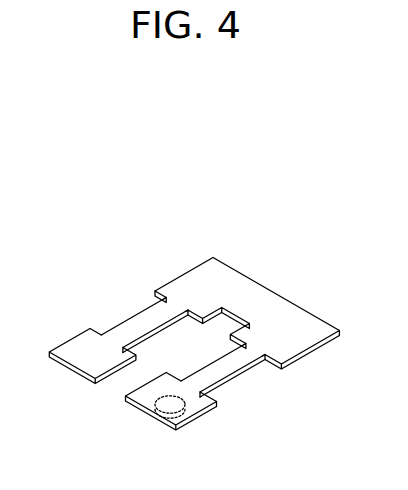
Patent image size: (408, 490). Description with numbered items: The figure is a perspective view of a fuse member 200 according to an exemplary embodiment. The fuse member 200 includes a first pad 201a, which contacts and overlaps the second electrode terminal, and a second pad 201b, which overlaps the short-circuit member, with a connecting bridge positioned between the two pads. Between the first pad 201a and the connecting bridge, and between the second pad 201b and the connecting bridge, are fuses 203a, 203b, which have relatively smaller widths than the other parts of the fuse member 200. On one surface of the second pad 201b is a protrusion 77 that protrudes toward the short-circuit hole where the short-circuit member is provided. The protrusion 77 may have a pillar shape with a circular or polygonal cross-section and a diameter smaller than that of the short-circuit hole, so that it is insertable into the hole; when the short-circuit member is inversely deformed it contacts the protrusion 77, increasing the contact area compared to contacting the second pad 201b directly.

The fuse member 200 is at (261, 258).
The first pad 201a is at (83, 350).
The second pad 201b is at (143, 398).
The fuse 203a is at (135, 315).
The fuse 203b is at (238, 377).
The protrusion 77 is at (172, 405).